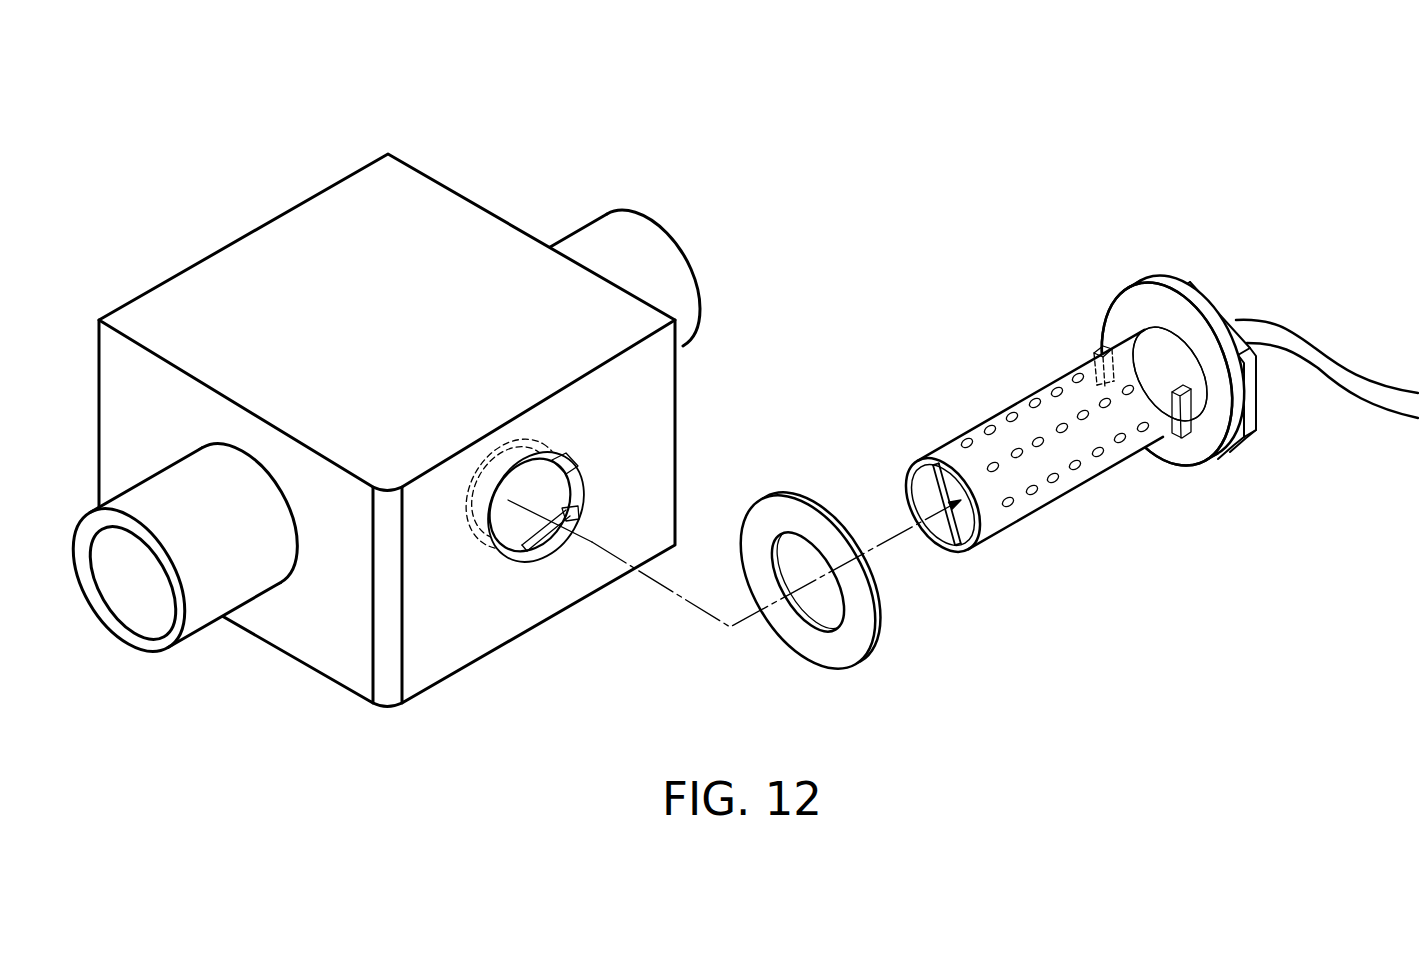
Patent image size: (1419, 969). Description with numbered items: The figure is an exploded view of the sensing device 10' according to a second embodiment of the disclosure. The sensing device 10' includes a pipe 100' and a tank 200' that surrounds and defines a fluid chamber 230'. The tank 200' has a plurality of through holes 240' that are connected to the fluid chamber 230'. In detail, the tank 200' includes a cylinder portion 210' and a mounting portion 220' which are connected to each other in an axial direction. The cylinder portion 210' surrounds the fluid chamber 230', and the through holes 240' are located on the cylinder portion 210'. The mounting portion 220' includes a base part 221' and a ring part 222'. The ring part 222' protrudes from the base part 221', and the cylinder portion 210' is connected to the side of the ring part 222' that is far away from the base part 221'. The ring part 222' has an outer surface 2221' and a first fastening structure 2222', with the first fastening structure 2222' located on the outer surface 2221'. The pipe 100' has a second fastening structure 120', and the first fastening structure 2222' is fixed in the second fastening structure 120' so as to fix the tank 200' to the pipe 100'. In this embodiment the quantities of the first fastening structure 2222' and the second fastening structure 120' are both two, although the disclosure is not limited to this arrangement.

The sensing device 10' is at (177, 94).
The pipe 100' is at (375, 419).
The second fastening structure 120' is at (597, 558).
The tank 200' is at (979, 580).
The cylinder portion 210' is at (1057, 439).
The mounting portion 220' is at (1169, 326).
The base part 221' is at (1285, 335).
The ring part 222' is at (1167, 348).
The outer surface 2221' is at (1230, 381).
The first fastening structure 2222' is at (1142, 394).
The fluid chamber 230' is at (929, 539).
The through holes 240' is at (1086, 524).